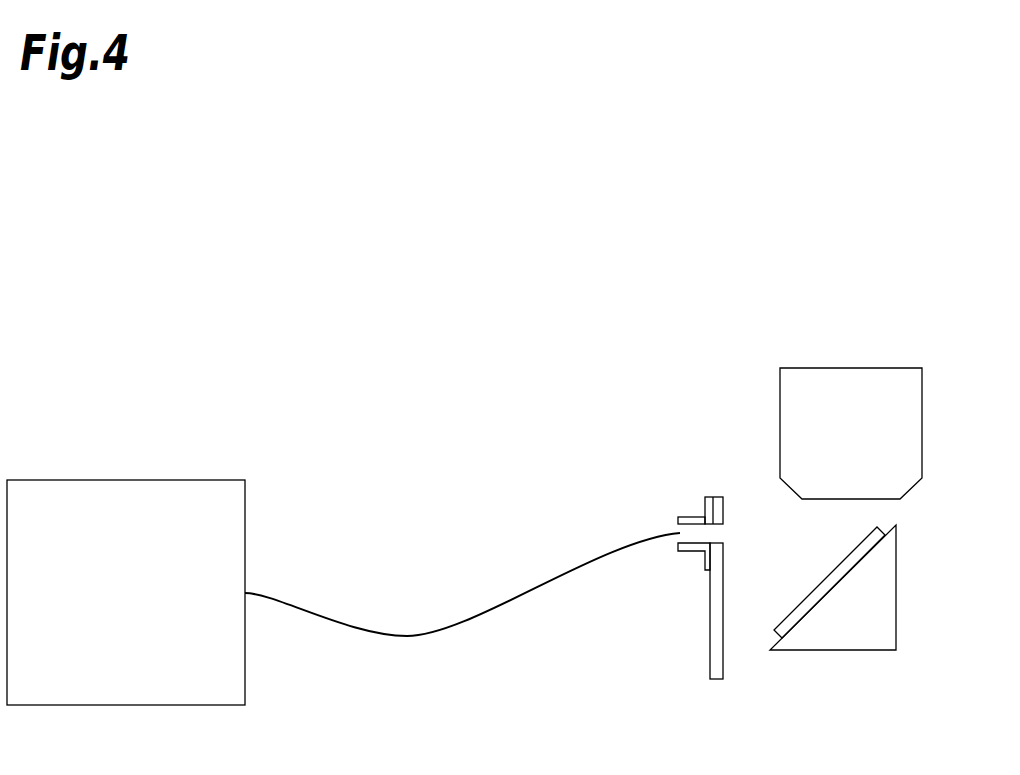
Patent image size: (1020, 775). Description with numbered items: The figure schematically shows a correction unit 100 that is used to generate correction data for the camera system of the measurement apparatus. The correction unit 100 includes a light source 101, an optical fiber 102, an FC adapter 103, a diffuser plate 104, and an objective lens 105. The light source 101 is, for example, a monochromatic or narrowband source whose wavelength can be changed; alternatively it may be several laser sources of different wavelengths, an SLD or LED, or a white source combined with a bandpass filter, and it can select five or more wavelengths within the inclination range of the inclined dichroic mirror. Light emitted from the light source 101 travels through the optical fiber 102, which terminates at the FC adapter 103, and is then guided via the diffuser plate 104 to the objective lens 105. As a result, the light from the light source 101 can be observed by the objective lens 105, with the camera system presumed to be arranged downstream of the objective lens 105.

The correction unit 100 is at (468, 360).
The light source 101 is at (198, 480).
The optical fiber 102 is at (418, 638).
The FC adapter 103 is at (688, 517).
The diffuser plate 104 is at (787, 617).
The objective lens 105 is at (883, 368).